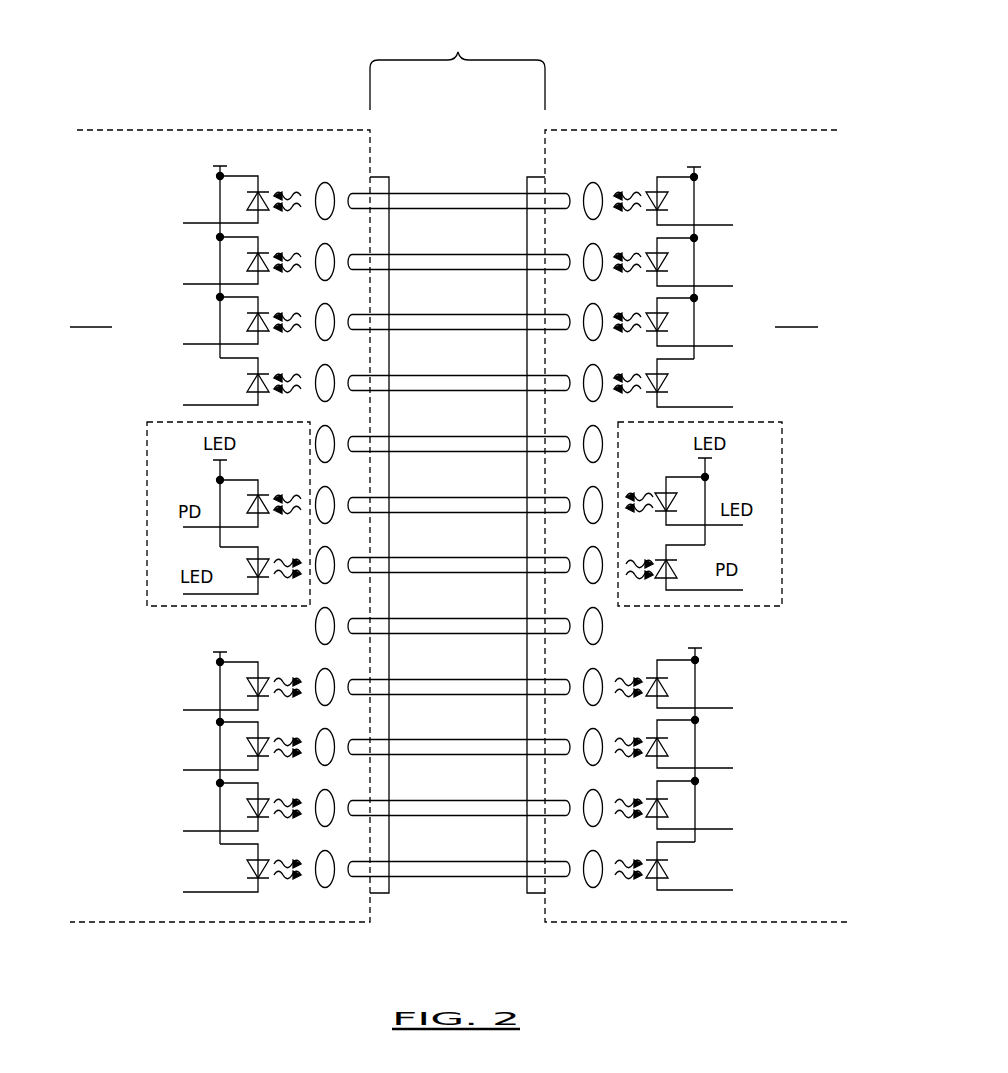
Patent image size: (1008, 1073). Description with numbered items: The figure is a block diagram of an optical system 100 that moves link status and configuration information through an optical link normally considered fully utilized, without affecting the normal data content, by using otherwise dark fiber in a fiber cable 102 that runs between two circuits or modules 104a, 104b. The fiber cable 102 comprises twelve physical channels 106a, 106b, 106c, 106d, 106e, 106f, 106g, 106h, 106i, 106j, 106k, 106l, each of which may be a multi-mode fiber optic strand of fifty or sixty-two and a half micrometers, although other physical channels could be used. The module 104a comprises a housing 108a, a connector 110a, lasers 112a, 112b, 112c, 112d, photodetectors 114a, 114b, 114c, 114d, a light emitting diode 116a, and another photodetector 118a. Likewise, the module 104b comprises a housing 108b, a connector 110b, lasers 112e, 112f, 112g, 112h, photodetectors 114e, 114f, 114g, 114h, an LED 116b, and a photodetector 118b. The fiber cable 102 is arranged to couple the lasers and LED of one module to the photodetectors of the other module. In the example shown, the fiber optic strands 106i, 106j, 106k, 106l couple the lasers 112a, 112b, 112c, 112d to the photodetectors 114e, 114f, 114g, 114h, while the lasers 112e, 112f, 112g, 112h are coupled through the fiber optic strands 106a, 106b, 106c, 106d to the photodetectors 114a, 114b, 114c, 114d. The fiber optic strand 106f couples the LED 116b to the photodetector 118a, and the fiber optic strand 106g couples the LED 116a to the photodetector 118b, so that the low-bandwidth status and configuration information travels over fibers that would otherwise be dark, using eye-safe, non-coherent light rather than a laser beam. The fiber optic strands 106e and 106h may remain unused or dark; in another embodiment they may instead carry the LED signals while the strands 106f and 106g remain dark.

The optical system 100 is at (255, 40).
The fiber cable 102 is at (457, 92).
The module 104a is at (114, 535).
The module 104b is at (802, 283).
The physical channel 106a is at (412, 194).
The physical channel 106b is at (412, 255).
The physical channel 106c is at (412, 315).
The physical channel 106d is at (412, 376).
The physical channel 106e is at (412, 437).
The physical channel 106f is at (412, 498).
The physical channel 106g is at (412, 558).
The physical channel 106h is at (412, 619).
The physical channel 106i is at (412, 680).
The physical channel 106j is at (412, 740).
The physical channel 106k is at (412, 801).
The physical channel 106l is at (412, 862).
The housing 108a is at (88, 130).
The housing 108b is at (826, 130).
The connector 110a is at (388, 894).
The connector 110b is at (528, 894).
The laser 112a is at (268, 676).
The laser 112b is at (268, 736).
The laser 112c is at (268, 797).
The laser 112d is at (268, 858).
The laser 112e is at (649, 191).
The laser 112f is at (646, 252).
The laser 112g is at (649, 312).
The laser 112h is at (649, 373).
The photodetector 114a is at (266, 191).
The photodetector 114b is at (266, 252).
The photodetector 114c is at (266, 312).
The photodetector 114d is at (266, 373).
The photodetector 114e is at (651, 668).
The photodetector 114f is at (649, 728).
The photodetector 114g is at (651, 789).
The photodetector 114h is at (651, 850).
The light emitting diode 116a is at (284, 545).
The LED 116b is at (660, 489).
The photodetector 118a is at (276, 477).
The photodetector 118b is at (660, 557).